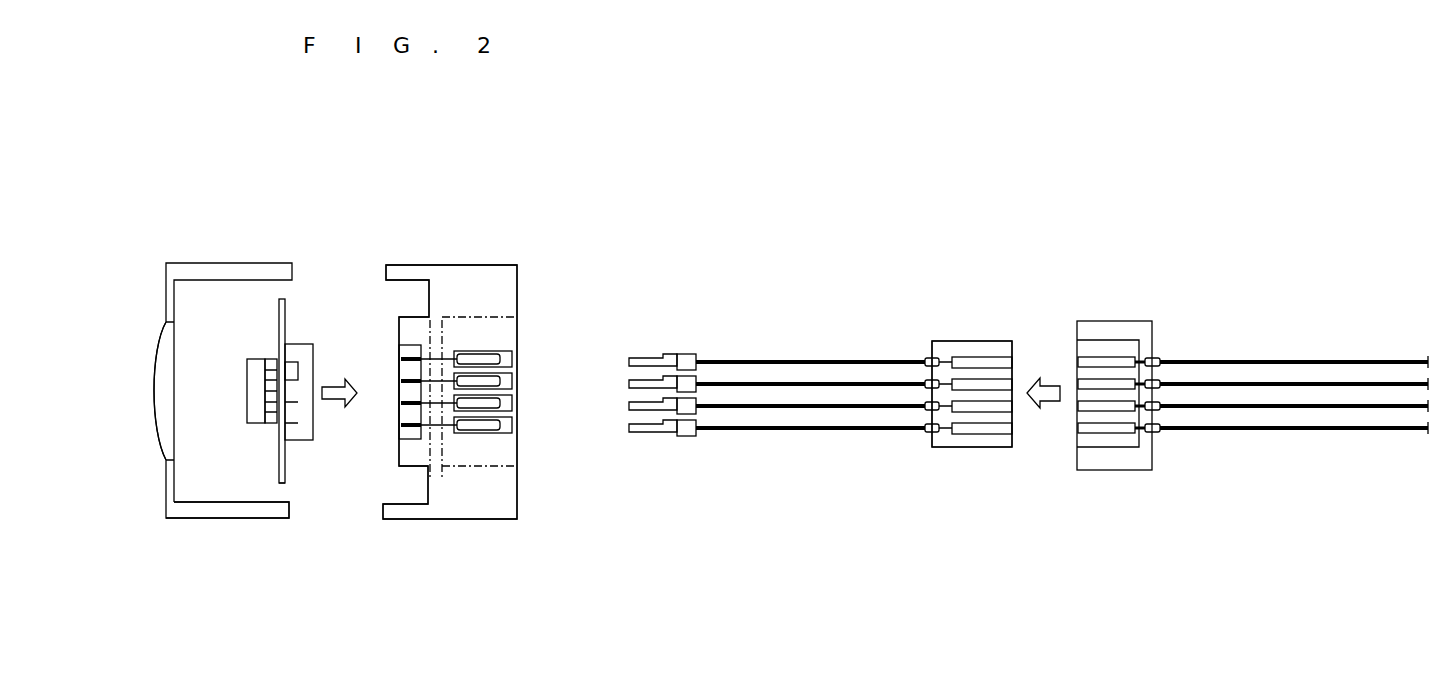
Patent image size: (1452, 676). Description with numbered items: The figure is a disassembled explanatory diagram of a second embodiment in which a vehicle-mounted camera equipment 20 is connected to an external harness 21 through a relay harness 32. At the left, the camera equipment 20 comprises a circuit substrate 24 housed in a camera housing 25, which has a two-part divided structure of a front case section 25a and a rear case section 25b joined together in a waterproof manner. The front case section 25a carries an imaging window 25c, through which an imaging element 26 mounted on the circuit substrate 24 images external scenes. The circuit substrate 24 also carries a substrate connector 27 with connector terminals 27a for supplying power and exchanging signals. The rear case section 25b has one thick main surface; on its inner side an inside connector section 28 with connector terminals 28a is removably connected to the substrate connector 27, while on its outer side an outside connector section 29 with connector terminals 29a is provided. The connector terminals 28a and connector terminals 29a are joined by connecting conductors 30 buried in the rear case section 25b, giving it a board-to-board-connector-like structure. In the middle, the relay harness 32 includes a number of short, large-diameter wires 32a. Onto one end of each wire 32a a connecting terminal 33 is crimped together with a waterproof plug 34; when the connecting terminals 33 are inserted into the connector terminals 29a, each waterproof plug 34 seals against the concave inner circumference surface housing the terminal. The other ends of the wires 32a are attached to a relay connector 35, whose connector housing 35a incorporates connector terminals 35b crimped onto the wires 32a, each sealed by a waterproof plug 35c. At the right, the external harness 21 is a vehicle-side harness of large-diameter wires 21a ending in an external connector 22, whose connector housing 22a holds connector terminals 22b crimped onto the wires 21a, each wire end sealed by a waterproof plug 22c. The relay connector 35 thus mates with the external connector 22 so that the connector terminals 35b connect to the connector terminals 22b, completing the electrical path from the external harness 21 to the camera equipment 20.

The vehicle-mounted camera equipment 20 is at (496, 193).
The external harness 21 is at (1290, 270).
The wires 21a is at (1347, 383).
The external connector 22 is at (1097, 320).
The connector housing 22a is at (1088, 466).
The connector terminals 22b is at (1120, 357).
The waterproof plug 22c is at (1156, 358).
The circuit substrate 24 is at (286, 476).
The camera housing 25 is at (221, 268).
The front case section 25a is at (213, 518).
The rear case section 25b is at (435, 520).
The imaging window 25c is at (158, 447).
The imaging element 26 is at (247, 410).
The substrate connector 27 is at (313, 440).
The connector terminals 27a is at (299, 381).
The inside connector section 28 is at (409, 317).
The connector terminals 28a is at (401, 381).
The outside connector section 29 is at (487, 310).
The connector terminals 29a is at (490, 357).
The connecting conductors 30 is at (432, 357).
The relay harness 32 is at (787, 271).
The wires 32a is at (818, 382).
The connecting terminal 33 is at (645, 356).
The waterproof plug 34 is at (685, 354).
The relay connector 35 is at (965, 341).
The connector housing 35a is at (958, 447).
The connector terminals 35b is at (995, 357).
The waterproof plug 35c is at (927, 358).